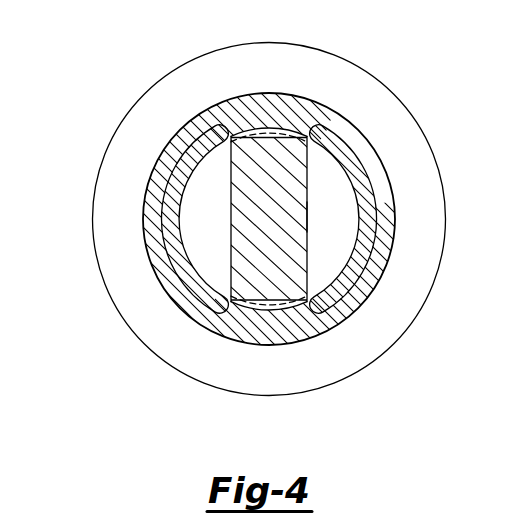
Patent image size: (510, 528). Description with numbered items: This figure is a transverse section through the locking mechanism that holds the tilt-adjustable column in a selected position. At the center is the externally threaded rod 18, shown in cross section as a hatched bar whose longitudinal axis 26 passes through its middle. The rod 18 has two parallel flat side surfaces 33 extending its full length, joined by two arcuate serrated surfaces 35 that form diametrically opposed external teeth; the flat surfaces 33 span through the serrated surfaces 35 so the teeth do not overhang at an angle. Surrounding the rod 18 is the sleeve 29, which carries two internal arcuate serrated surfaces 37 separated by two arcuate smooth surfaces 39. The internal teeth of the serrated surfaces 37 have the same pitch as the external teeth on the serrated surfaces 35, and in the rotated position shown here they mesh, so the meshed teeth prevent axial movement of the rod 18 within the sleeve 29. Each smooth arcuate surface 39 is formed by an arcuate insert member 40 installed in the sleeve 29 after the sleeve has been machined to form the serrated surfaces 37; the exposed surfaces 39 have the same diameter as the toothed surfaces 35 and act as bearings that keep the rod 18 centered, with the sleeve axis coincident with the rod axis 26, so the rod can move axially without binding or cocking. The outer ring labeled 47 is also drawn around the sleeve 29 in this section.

The externally threaded rod 18 is at (307, 232).
The longitudinal axis of rod 26 is at (269, 220).
The sleeve 29 is at (165, 145).
The flat side surfaces 33 is at (232, 277).
The arcuate serrated surfaces 35 is at (235, 132).
The internal arcuate serrated surfaces 37 is at (290, 133).
The arcuate smooth surfaces 39 is at (185, 219).
The arcuate insert member 40 is at (173, 186).
The outer ring 47 is at (388, 331).